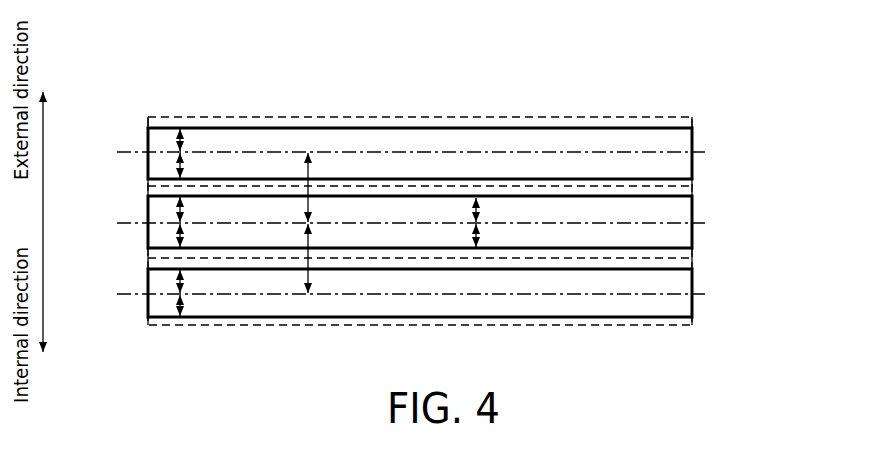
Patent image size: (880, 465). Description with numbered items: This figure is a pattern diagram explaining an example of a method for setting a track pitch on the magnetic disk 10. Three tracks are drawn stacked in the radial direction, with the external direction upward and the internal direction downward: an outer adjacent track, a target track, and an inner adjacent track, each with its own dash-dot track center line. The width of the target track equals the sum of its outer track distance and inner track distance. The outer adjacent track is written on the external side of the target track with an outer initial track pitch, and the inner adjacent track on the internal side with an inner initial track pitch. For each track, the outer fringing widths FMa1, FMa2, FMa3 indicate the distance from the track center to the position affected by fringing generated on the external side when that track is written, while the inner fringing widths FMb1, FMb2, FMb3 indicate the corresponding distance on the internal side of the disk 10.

The magnetic disk 10 is at (690, 58).
The outer fringing width FMa1 is at (152, 133).
The inner fringing width FMb1 is at (152, 176).
The outer fringing width FMa2 is at (152, 201).
The inner fringing width FMb2 is at (152, 245).
The outer fringing width FMa3 is at (152, 273).
The inner fringing width FMb3 is at (152, 313).